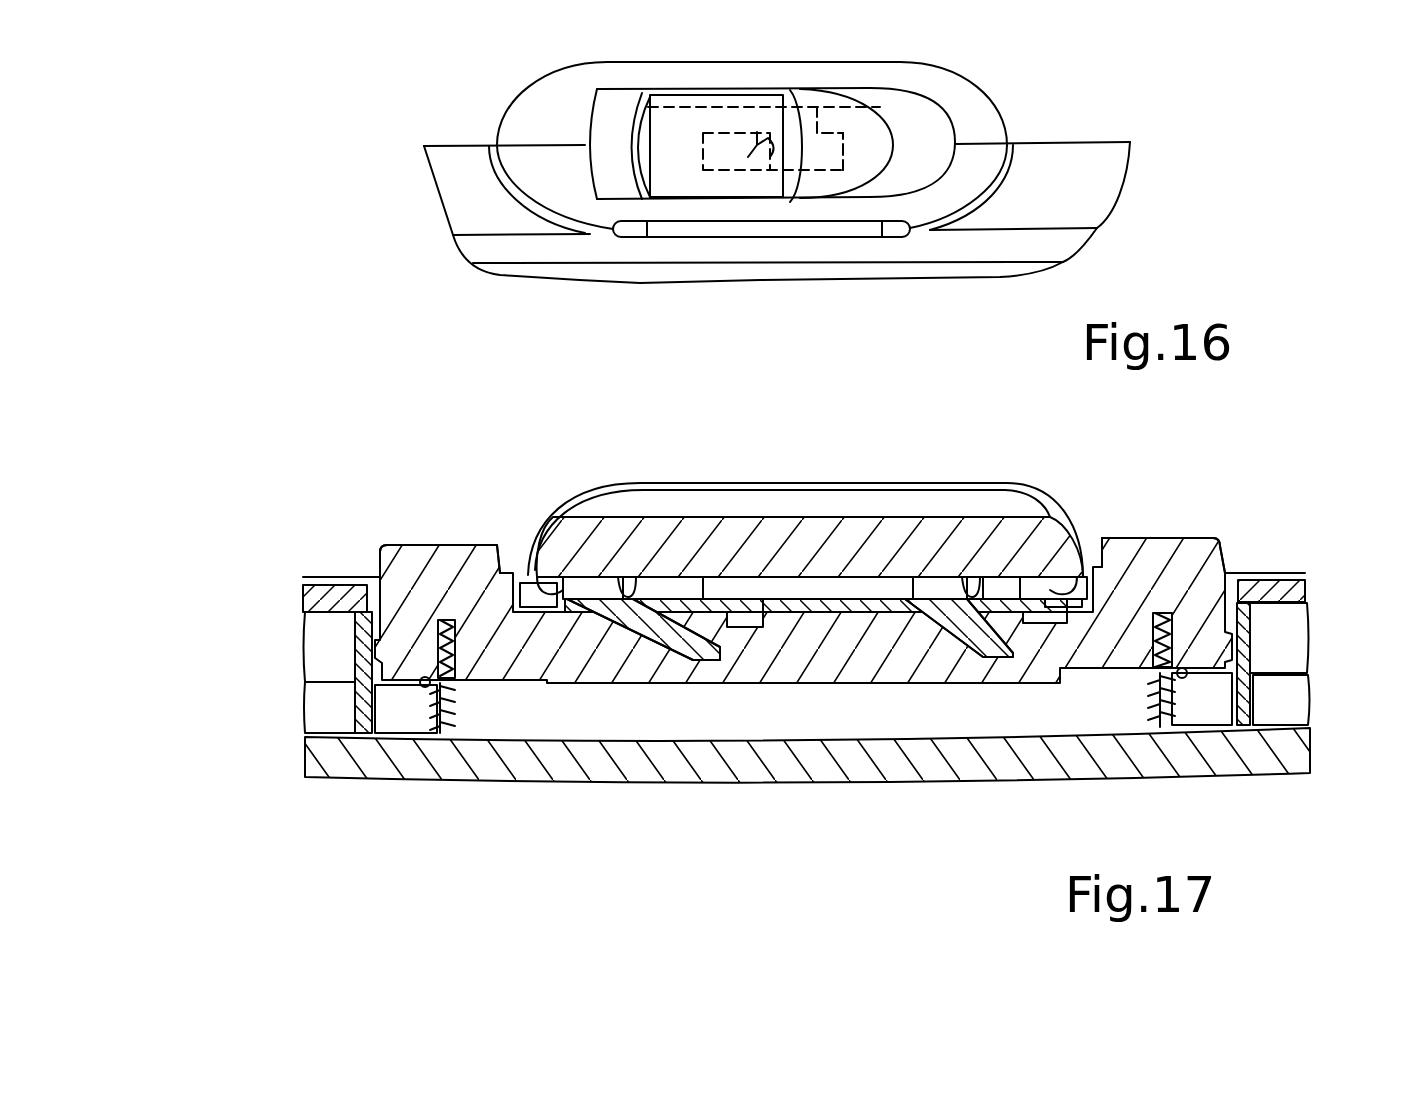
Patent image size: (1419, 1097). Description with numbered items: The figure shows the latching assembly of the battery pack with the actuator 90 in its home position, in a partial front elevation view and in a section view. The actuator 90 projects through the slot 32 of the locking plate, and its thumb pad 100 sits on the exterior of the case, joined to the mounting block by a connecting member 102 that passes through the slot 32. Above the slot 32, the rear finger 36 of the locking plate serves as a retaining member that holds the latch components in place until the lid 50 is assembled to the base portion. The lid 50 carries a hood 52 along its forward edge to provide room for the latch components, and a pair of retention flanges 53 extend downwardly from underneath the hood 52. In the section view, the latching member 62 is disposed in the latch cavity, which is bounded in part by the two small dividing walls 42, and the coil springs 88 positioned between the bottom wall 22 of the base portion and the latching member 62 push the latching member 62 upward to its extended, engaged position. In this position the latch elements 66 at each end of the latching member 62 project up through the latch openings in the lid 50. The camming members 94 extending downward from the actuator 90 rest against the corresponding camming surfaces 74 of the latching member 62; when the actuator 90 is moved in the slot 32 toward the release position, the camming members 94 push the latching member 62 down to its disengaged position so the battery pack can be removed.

In FIG. 16, the thumb pad 100 is at (658, 130).
In FIG. 16, the rear finger 36 is at (745, 183).
In FIG. 16, the hood 52 is at (980, 88).
In FIG. 17, the hood 52 is at (953, 527).
In FIG. 16, the connecting member 102 is at (745, 183).
In FIG. 16, the slot 32 is at (819, 173).
In FIG. 17, the retention flanges 53 is at (623, 592).
In FIG. 17, the actuator 90 is at (818, 592).
In FIG. 17, the latch elements 66 is at (452, 553).
In FIG. 17, the lid 50 is at (1272, 580).
In FIG. 17, the dividing walls 42 is at (355, 643).
In FIG. 17, the camming surfaces 74 is at (657, 642).
In FIG. 17, the camming members 94 is at (706, 658).
In FIG. 17, the bottom wall 22 is at (797, 783).
In FIG. 17, the latching member 62 is at (864, 686).
In FIG. 17, the coil springs 88 is at (435, 703).